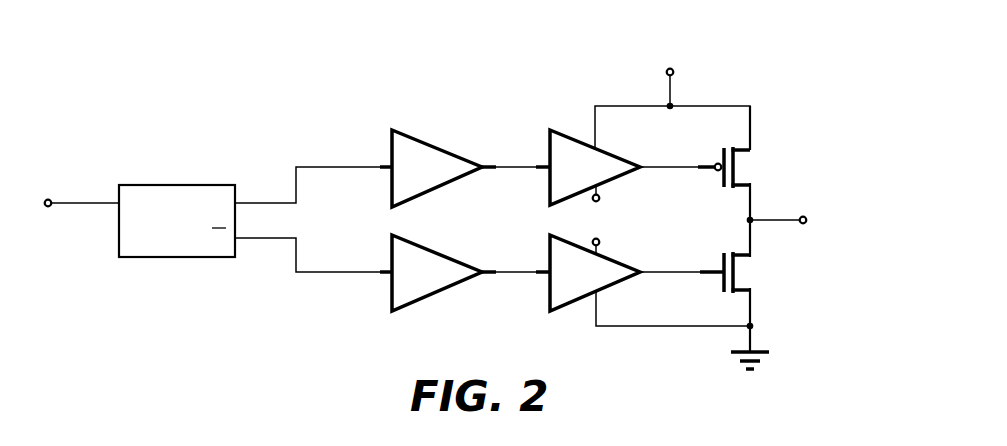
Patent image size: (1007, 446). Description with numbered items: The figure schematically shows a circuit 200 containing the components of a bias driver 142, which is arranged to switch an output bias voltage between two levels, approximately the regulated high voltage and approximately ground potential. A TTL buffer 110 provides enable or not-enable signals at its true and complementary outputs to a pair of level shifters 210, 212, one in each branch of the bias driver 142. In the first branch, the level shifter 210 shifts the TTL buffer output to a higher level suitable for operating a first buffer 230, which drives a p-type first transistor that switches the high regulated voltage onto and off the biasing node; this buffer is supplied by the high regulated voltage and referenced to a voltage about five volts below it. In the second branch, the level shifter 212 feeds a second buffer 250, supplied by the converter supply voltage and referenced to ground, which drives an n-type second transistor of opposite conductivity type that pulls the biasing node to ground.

The bias generation circuit 200 is at (236, 60).
The TTL buffer 110 is at (162, 230).
The level shifter 210 is at (402, 178).
The level shifter 212 is at (402, 284).
The first buffer 230 is at (562, 178).
The second buffer 250 is at (562, 284).
The bias driver 142 is at (807, 88).